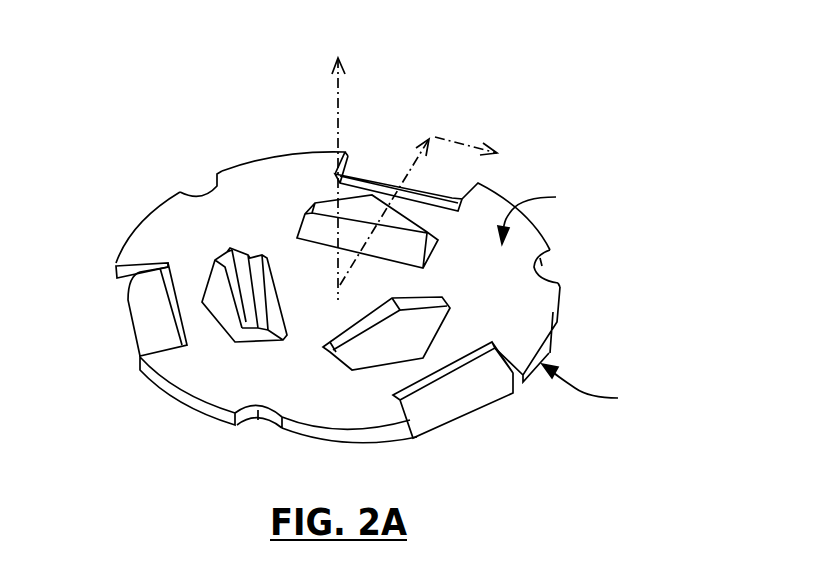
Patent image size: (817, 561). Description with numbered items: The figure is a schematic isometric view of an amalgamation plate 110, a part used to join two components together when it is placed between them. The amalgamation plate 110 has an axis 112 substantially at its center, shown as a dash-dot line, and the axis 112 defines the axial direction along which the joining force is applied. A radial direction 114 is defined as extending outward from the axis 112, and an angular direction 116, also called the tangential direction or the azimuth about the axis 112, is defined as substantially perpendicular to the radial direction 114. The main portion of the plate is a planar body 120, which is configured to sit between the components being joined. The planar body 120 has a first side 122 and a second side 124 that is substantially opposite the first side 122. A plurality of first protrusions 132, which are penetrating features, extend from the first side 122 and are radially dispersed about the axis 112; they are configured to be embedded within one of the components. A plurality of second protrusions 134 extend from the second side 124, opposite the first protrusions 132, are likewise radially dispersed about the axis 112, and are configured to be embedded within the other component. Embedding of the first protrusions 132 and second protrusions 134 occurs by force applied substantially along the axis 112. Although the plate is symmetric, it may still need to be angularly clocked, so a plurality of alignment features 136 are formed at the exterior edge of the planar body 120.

The amalgamation plate 110 is at (592, 93).
The axis 112 is at (333, 100).
The radial direction 114 is at (420, 155).
The angular direction 116 is at (465, 140).
The planar body 120 is at (265, 199).
The first side 122 is at (547, 213).
The second side 124 is at (602, 389).
The first protrusions 132 is at (142, 318).
The second protrusions 134 is at (238, 258).
The alignment features 136 is at (547, 265).